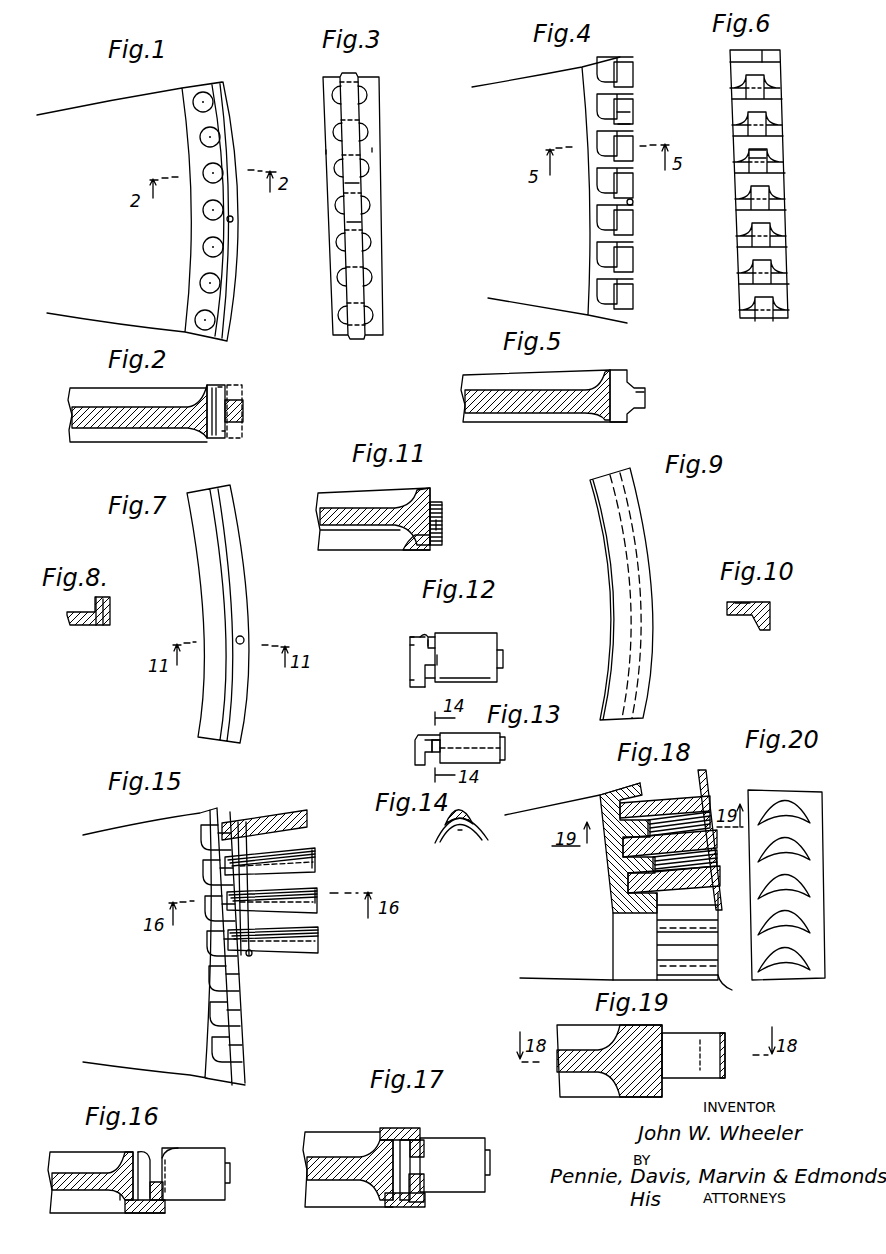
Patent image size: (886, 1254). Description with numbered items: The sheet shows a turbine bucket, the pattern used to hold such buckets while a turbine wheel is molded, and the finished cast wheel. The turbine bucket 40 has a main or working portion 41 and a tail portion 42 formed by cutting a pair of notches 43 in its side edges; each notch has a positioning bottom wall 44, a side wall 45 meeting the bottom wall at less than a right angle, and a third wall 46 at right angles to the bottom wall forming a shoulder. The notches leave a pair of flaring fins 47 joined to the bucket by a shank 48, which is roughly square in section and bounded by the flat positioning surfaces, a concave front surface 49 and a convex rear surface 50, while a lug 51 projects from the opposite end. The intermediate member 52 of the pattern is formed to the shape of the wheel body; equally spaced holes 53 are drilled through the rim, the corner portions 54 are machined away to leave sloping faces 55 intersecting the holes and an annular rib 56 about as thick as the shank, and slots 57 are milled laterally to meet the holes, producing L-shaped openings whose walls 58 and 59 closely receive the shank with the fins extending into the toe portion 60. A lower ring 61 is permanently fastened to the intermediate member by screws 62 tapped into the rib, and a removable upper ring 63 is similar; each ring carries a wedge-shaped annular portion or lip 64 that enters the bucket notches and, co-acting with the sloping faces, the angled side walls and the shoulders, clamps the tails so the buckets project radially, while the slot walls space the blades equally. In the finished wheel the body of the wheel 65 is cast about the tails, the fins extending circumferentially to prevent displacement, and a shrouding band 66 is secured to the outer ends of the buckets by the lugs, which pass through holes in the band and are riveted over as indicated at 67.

In FIG. 12, the turbine bucket 40 is at (490, 642).
In FIG. 13, the turbine bucket 40 is at (470, 748).
In FIG. 15, the turbine bucket 40 is at (270, 818).
In FIG. 18, the turbine bucket 40 is at (668, 802).
In FIG. 20, the turbine bucket 40 is at (770, 810).
In FIG. 19, the turbine bucket 40 is at (700, 1046).
In FIG. 16, the turbine bucket 40 is at (212, 1161).
In FIG. 17, the turbine bucket 40 is at (470, 1146).
In FIG. 12, the main or working portion 41 is at (490, 678).
In FIG. 12, the tail portion 42 is at (412, 660).
In FIG. 12, the notches 43 is at (438, 660).
In FIG. 12, the positioning bottom wall 44 is at (428, 642).
In FIG. 13, the positioning bottom wall 44 is at (428, 742).
In FIG. 14, the positioning bottom wall 44 is at (422, 848).
In FIG. 16, the positioning bottom wall 44 is at (161, 1181).
In FIG. 17, the positioning bottom wall 44 is at (425, 1160).
In FIG. 12, the side wall 45 is at (412, 645).
In FIG. 13, the side wall 45 is at (420, 752).
In FIG. 15, the side wall 45 is at (235, 946).
In FIG. 16, the side wall 45 is at (148, 1157).
In FIG. 17, the side wall 45 is at (425, 1134).
In FIG. 12, the third wall 46 is at (432, 636).
In FIG. 13, the third wall 46 is at (442, 746).
In FIG. 16, the third wall 46 is at (178, 1151).
In FIG. 17, the third wall 46 is at (416, 1186).
In FIG. 12, the flaring fins 47 is at (413, 637).
In FIG. 18, the flaring fins 47 is at (625, 868).
In FIG. 19, the flaring fins 47 is at (637, 1081).
In FIG. 12, the shank 48 is at (428, 675).
In FIG. 14, the shank 48 is at (448, 822).
In FIG. 14, the concave front surface 49 is at (460, 831).
In FIG. 14, the convex rear surface 50 is at (465, 813).
In FIG. 12, the lug 51 is at (504, 657).
In FIG. 13, the lug 51 is at (506, 746).
In FIG. 18, the lug 51 is at (718, 887).
In FIG. 19, the lug 51 is at (752, 1059).
In FIG. 1, the intermediate member 52 is at (137, 211).
In FIG. 3, the intermediate member 52 is at (353, 206).
In FIG. 4, the intermediate member 52 is at (549, 190).
In FIG. 2, the intermediate member 52 is at (185, 418).
In FIG. 5, the intermediate member 52 is at (548, 401).
In FIG. 11, the intermediate member 52 is at (330, 512).
In FIG. 15, the intermediate member 52 is at (118, 1053).
In FIG. 16, the intermediate member 52 is at (85, 1181).
In FIG. 17, the intermediate member 52 is at (351, 1169).
In FIG. 1, the holes 53 is at (205, 283).
In FIG. 3, the holes 53 is at (365, 132).
In FIG. 2, the holes 53 is at (215, 426).
In FIG. 2, the portions 54 is at (243, 388).
In FIG. 3, the sloping faces 55 is at (327, 152).
In FIG. 2, the sloping faces 55 is at (219, 387).
In FIG. 1, the annular rib 56 is at (231, 254).
In FIG. 3, the annular rib 56 is at (352, 183).
In FIG. 2, the annular rib 56 is at (246, 408).
In FIG. 5, the annular rib 56 is at (646, 401).
In FIG. 11, the annular rib 56 is at (445, 505).
In FIG. 4, the slots 57 is at (650, 249).
In FIG. 6, the slots 57 is at (752, 256).
In FIG. 15, the slots 57 is at (245, 1010).
In FIG. 16, the slots 57 is at (140, 1206).
In FIG. 4, the wall 58 is at (623, 105).
In FIG. 6, the wall 58 is at (752, 141).
In FIG. 5, the wall 58 is at (646, 392).
In FIG. 15, the wall 58 is at (300, 851).
In FIG. 4, the wall 59 is at (620, 119).
In FIG. 6, the wall 59 is at (745, 153).
In FIG. 15, the wall 59 is at (290, 881).
In FIG. 4, the toe portion 60 is at (618, 128).
In FIG. 7, the lower ring 61 is at (205, 543).
In FIG. 8, the lower ring 61 is at (88, 623).
In FIG. 11, the lower ring 61 is at (413, 547).
In FIG. 16, the lower ring 61 is at (155, 1209).
In FIG. 17, the lower ring 61 is at (421, 1204).
In FIG. 4, the screws 62 is at (634, 202).
In FIG. 11, the screws 62 is at (444, 525).
In FIG. 9, the upper ring 63 is at (620, 577).
In FIG. 10, the upper ring 63 is at (755, 601).
In FIG. 17, the upper ring 63 is at (405, 1131).
In FIG. 8, the wedge-shaped annular portion or lip 64 is at (111, 606).
In FIG. 9, the wedge-shaped annular portion or lip 64 is at (652, 629).
In FIG. 10, the wedge-shaped annular portion or lip 64 is at (771, 616).
In FIG. 18, the body of the wheel 65 is at (591, 960).
In FIG. 20, the body of the wheel 65 is at (806, 802).
In FIG. 19, the body of the wheel 65 is at (583, 1066).
In FIG. 18, the shrouding band 66 is at (725, 889).
In FIG. 19, the shrouding band 66 is at (726, 1041).
In FIG. 18, the riveted over lugs 67 is at (715, 866).